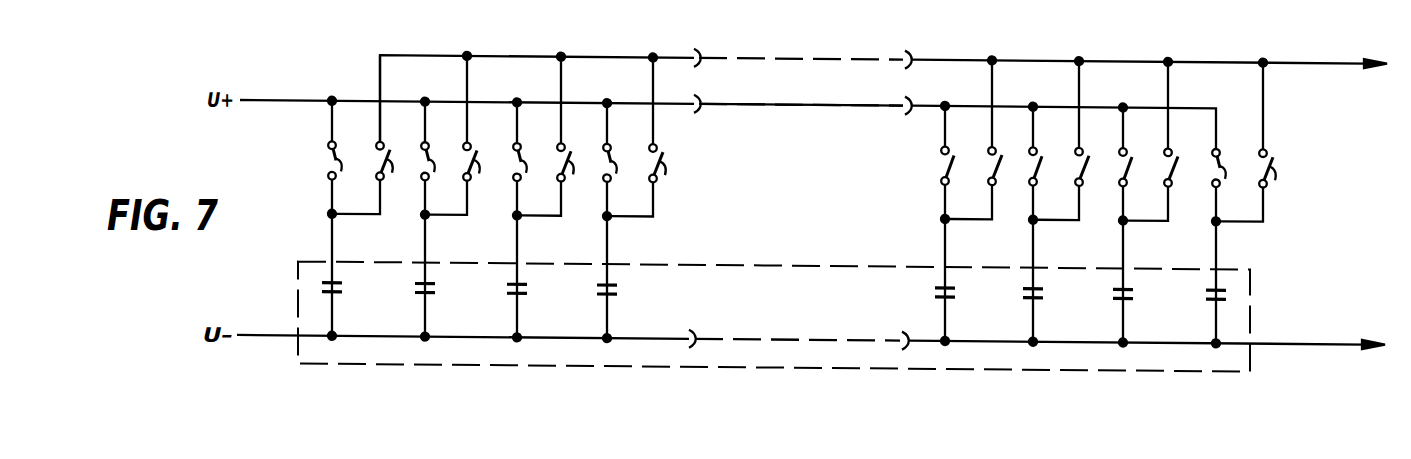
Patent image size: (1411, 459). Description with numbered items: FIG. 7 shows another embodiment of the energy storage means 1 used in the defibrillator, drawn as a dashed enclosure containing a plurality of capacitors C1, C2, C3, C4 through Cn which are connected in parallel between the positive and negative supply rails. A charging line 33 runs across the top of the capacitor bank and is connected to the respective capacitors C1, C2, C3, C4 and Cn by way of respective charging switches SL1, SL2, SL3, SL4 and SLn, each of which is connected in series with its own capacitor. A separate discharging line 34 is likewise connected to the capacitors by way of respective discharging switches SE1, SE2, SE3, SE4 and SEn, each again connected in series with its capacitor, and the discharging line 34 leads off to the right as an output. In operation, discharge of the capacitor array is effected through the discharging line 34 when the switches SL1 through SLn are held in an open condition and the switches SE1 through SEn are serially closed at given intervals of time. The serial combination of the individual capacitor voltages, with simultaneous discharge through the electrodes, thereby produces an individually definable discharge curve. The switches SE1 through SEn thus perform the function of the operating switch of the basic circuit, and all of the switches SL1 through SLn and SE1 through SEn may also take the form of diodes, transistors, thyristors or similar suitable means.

The energy storage means 1 is at (307, 270).
The charging line 33 is at (314, 99).
The discharging line 34 is at (529, 52).
The charging switch SL1 is at (347, 192).
The discharging switch SE1 is at (376, 135).
The charging switch SL2 is at (440, 193).
The discharging switch SE2 is at (468, 136).
The charging switch SL3 is at (533, 193).
The discharging switch SE3 is at (559, 136).
The charging switch SL4 is at (623, 194).
The discharging switch SE4 is at (651, 137).
The charging switch SLn is at (1232, 220).
The discharging switch SEn is at (1261, 142).
The capacitor C1 is at (343, 293).
The capacitor C2 is at (431, 293).
The capacitor C3 is at (523, 293).
The capacitor C4 is at (614, 293).
The capacitor Cn is at (1212, 298).